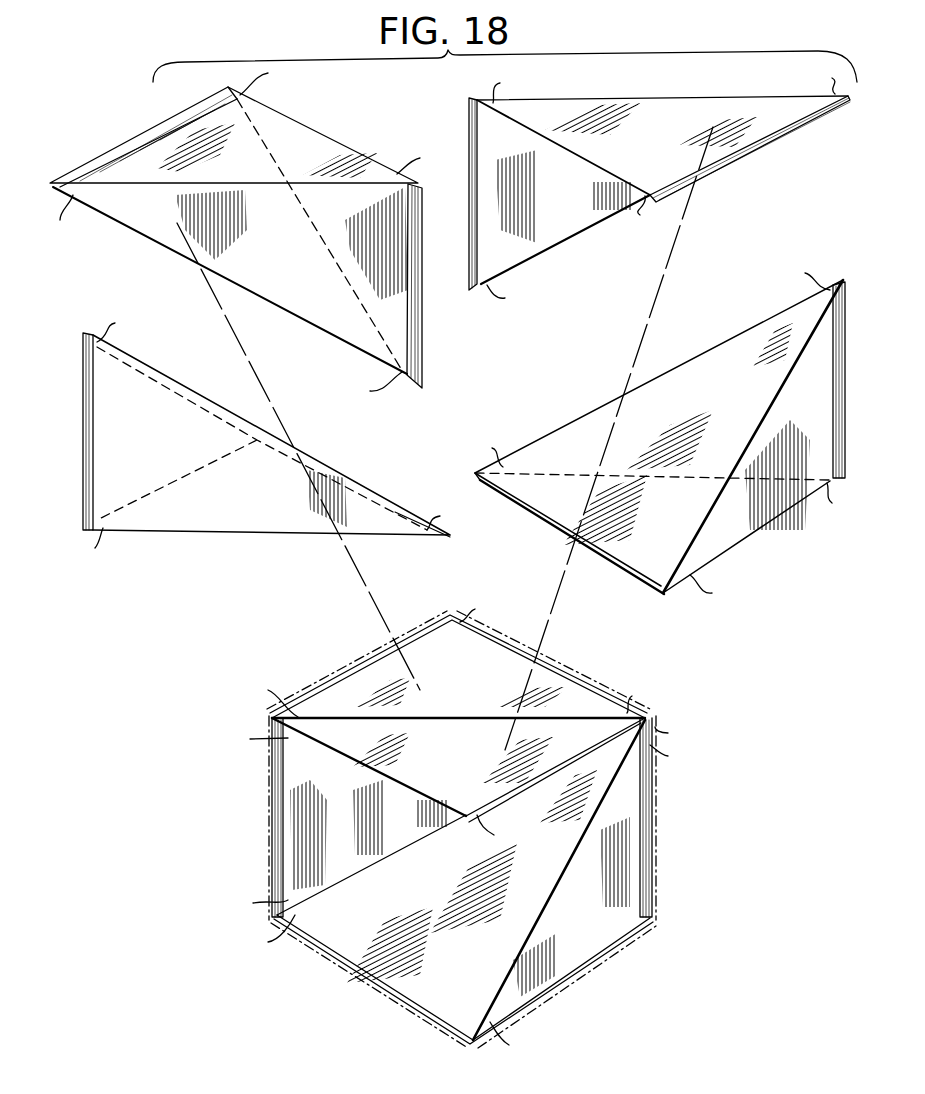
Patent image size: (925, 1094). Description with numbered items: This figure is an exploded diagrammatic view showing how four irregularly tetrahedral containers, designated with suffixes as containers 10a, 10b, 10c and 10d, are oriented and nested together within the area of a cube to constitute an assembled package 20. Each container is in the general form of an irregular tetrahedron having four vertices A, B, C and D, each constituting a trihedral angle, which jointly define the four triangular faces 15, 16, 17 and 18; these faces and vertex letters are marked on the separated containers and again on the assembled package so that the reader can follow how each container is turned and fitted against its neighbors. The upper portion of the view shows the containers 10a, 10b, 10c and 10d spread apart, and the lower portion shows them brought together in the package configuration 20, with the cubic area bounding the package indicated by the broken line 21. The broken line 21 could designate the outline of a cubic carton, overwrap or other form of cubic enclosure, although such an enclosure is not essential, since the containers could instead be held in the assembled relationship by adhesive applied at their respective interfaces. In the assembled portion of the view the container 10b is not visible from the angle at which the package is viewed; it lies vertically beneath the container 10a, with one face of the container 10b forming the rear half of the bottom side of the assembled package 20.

The container 10a is at (325, 132).
The container 10b is at (250, 537).
The container 10c is at (652, 96).
The container 10d is at (753, 549).
The triangular face 15 is at (291, 252).
The triangular face 16 is at (722, 407).
The triangular face 17 is at (255, 162).
The triangular face 18 is at (567, 212).
The assembled package 20 is at (660, 838).
The broken line 21 is at (640, 928).